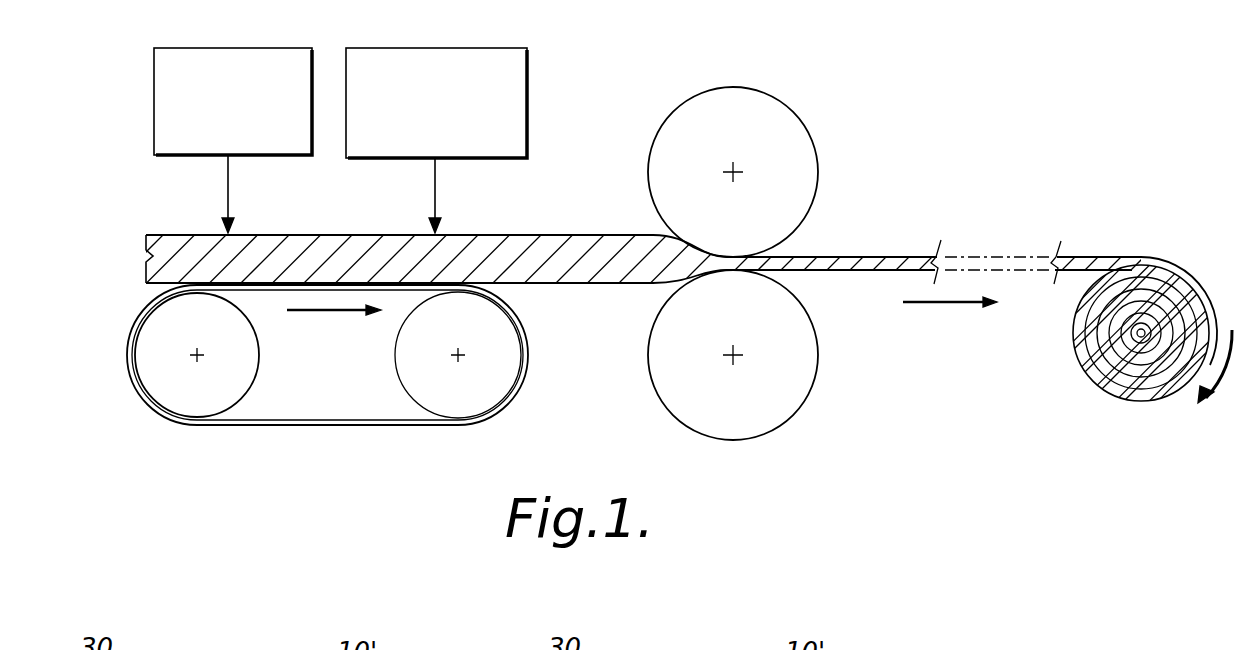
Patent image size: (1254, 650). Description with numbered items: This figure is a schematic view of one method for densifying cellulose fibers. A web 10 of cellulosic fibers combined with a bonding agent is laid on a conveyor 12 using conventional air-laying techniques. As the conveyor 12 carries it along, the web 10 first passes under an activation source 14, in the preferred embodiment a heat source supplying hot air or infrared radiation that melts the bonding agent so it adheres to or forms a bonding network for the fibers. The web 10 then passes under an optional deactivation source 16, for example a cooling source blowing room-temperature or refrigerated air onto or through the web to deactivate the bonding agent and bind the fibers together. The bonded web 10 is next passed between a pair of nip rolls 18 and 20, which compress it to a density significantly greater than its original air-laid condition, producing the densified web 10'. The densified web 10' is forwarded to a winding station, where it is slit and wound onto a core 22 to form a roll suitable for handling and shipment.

The web 10 is at (493, 259).
The densified web 10' is at (976, 267).
The conveyor 12 is at (264, 292).
The activation source 14 is at (154, 82).
The deactivation source 16 is at (527, 85).
The nip roll 18 is at (797, 107).
The nip roll 20 is at (790, 418).
The core 22 is at (1092, 380).